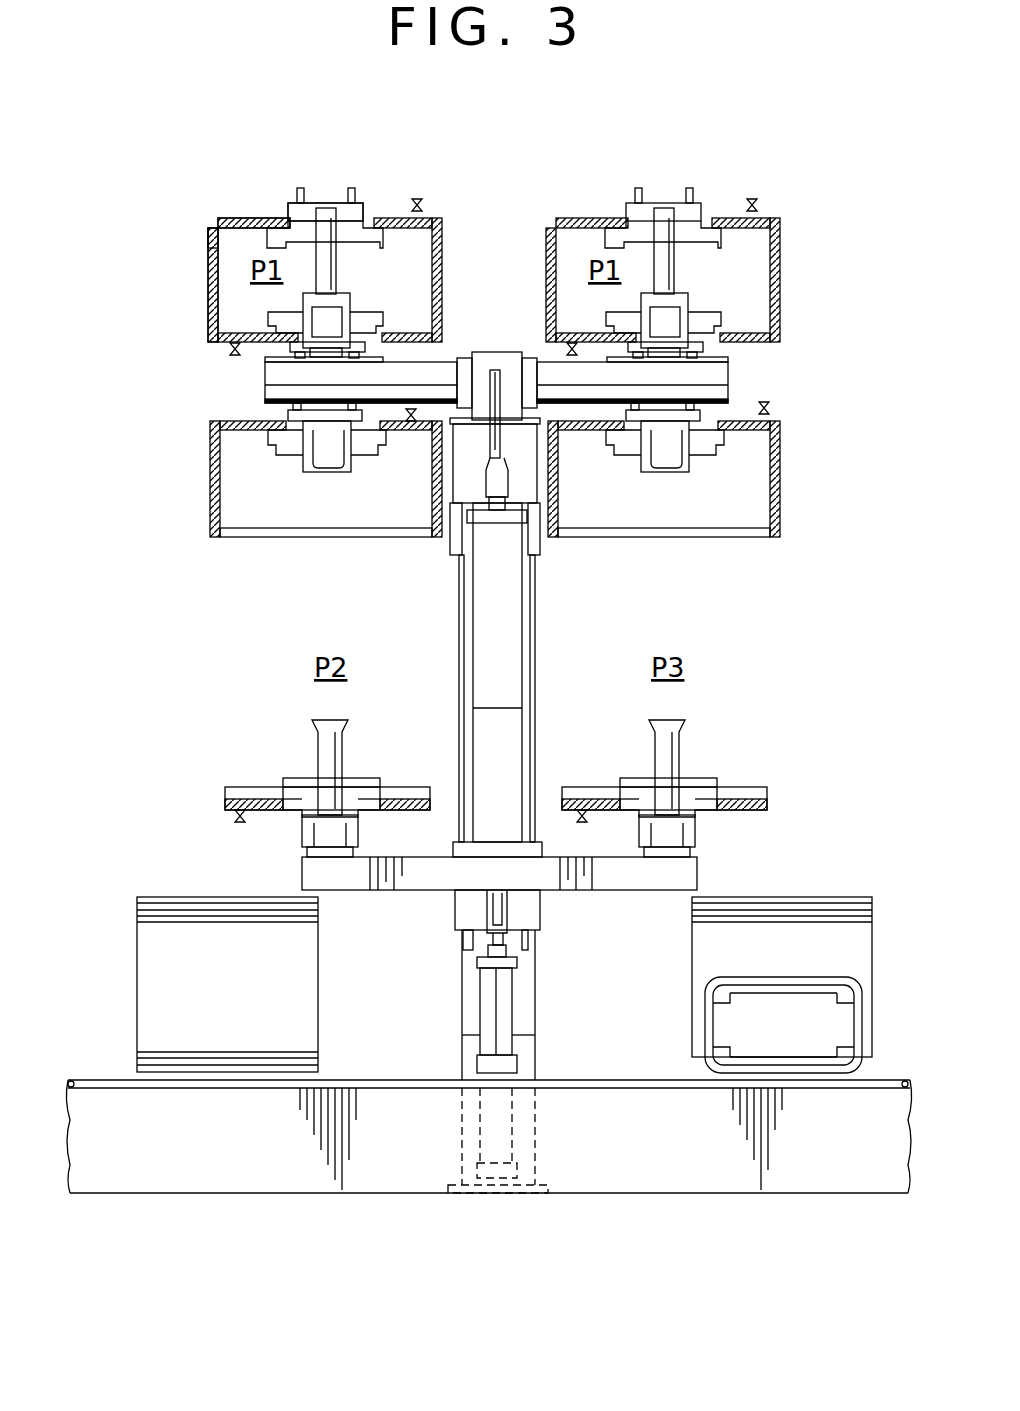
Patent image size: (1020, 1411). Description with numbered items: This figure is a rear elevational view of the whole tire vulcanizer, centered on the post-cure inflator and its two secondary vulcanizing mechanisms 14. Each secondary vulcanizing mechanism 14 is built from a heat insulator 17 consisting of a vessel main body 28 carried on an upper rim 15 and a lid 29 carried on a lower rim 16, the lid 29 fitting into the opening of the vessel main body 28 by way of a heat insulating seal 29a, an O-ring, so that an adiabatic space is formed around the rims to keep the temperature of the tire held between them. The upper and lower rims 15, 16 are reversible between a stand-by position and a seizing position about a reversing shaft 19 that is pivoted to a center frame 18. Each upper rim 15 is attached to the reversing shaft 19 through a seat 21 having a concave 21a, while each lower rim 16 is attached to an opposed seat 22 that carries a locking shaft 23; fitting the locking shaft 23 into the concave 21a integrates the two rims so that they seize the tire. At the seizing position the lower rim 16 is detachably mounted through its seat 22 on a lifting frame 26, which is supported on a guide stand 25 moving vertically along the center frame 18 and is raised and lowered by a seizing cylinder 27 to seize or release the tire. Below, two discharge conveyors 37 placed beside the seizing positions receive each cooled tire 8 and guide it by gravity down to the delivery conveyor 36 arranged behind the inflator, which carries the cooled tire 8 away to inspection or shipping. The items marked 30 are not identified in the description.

The cooled tire 8 is at (862, 1004).
The secondary vulcanizing mechanism 14 is at (252, 390).
The upper rim 15 is at (557, 388).
The lower rim 16 is at (521, 484).
The heat insulator 17 is at (482, 383).
The center frame 18 is at (518, 748).
The reversing shaft 19 is at (440, 360).
The seat 21 is at (517, 397).
The concave 21a is at (488, 384).
The seat 22 is at (502, 506).
The locking shaft 23 is at (488, 447).
The guide stand 25 is at (456, 846).
The lifting frame 26 is at (618, 882).
The seizing cylinder 27 is at (505, 1000).
The vessel main body 28 is at (494, 352).
The lid 29 is at (494, 474).
The heat insulating seal 29a is at (500, 213).
The clamp 30 is at (489, 501).
The delivery conveyor 36 is at (678, 1170).
The discharge conveyor 37 is at (147, 1005).